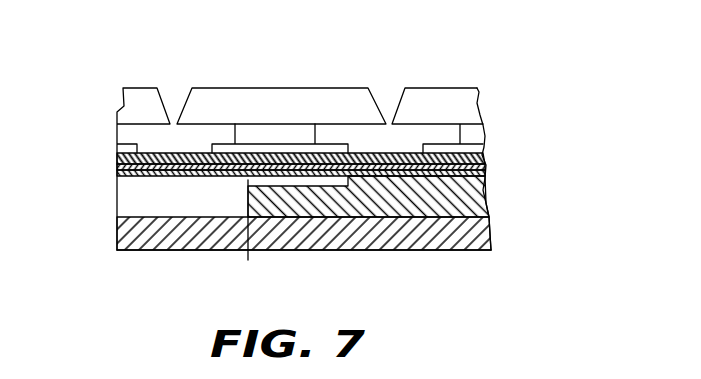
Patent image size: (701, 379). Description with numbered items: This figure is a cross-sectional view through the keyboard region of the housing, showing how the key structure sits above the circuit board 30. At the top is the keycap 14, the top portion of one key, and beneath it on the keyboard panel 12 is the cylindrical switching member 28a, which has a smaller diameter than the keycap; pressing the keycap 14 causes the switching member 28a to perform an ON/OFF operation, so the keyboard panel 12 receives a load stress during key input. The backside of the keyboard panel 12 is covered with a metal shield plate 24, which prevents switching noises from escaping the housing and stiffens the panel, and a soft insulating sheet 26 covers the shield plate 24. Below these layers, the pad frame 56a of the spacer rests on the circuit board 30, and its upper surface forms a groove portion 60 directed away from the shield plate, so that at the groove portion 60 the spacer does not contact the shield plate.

The keyboard panel 12 is at (483, 149).
The keycap 14 is at (343, 97).
The metal shield plate 24 is at (483, 171).
The soft insulating sheet 26 is at (119, 177).
The switching member 28a is at (260, 123).
The circuit board 30 is at (362, 240).
The pad frame 56a is at (483, 202).
The groove portion 60 is at (249, 257).